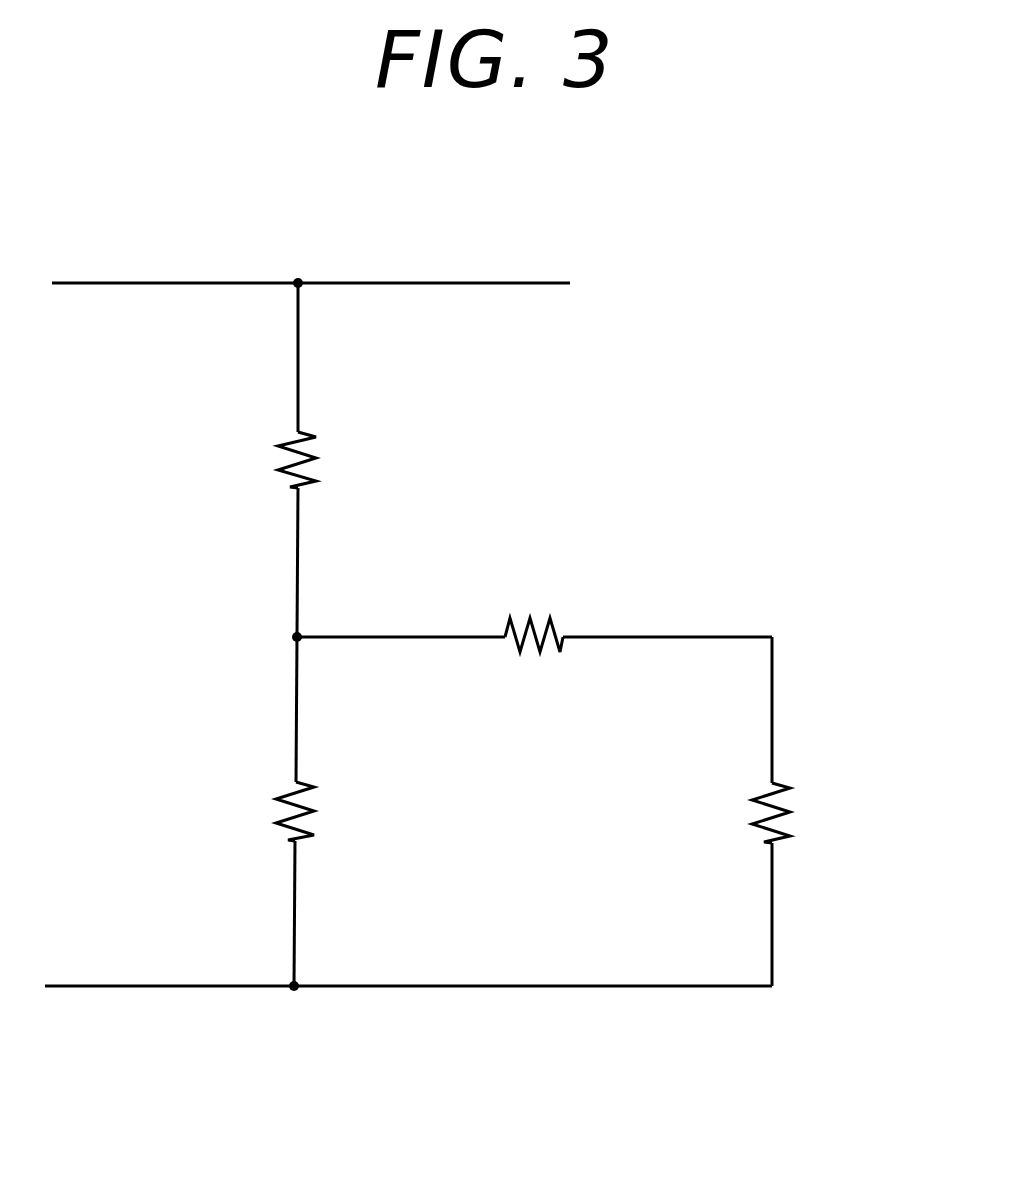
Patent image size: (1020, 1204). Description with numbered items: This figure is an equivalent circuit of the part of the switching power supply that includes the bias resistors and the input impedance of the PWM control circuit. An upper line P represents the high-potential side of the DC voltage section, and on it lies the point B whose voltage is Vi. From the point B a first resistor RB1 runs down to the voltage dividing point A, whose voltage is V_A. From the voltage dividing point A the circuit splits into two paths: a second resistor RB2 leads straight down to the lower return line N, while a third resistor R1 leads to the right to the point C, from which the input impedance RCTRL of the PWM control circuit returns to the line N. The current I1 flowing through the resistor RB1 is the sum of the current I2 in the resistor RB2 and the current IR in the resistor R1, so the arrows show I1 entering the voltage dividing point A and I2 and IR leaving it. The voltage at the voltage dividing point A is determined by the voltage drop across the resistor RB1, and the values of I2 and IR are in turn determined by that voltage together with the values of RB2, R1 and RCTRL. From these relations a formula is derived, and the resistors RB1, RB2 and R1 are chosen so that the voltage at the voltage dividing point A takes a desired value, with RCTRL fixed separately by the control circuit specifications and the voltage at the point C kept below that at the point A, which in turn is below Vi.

The positive terminal line of the DC voltage section P is at (176, 283).
The point B in the DC voltage section B is at (300, 282).
The voltage dividing point A is at (292, 637).
The point C is at (770, 703).
The negative terminal line of the DC voltage section N is at (162, 987).
The resistor RB1 is at (318, 448).
The resistor RB2 is at (316, 798).
The resistor R1 is at (528, 648).
The input impedance of the PWM control circuit RCTRL is at (792, 800).
The current flowing through the resistor RB1 I1 is at (215, 412).
The current in the resistor RB2 I2 is at (212, 763).
The current in the resistor R1 IR is at (820, 700).